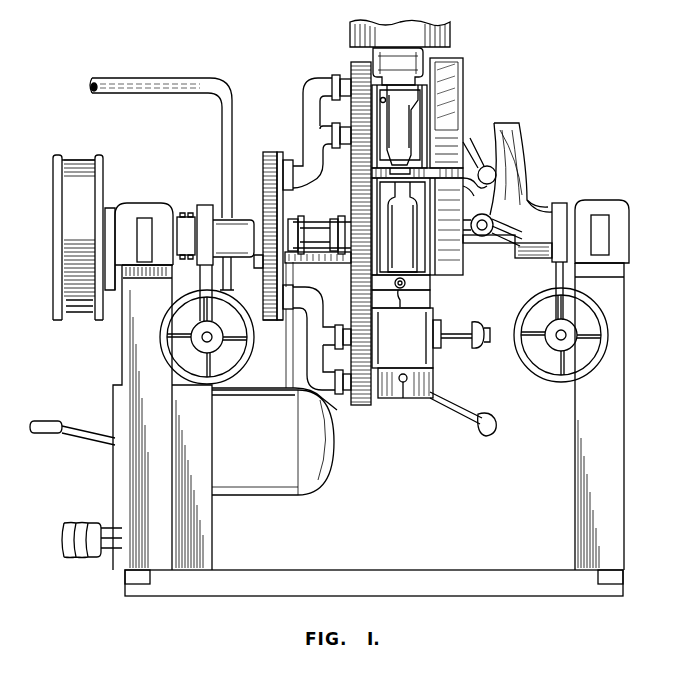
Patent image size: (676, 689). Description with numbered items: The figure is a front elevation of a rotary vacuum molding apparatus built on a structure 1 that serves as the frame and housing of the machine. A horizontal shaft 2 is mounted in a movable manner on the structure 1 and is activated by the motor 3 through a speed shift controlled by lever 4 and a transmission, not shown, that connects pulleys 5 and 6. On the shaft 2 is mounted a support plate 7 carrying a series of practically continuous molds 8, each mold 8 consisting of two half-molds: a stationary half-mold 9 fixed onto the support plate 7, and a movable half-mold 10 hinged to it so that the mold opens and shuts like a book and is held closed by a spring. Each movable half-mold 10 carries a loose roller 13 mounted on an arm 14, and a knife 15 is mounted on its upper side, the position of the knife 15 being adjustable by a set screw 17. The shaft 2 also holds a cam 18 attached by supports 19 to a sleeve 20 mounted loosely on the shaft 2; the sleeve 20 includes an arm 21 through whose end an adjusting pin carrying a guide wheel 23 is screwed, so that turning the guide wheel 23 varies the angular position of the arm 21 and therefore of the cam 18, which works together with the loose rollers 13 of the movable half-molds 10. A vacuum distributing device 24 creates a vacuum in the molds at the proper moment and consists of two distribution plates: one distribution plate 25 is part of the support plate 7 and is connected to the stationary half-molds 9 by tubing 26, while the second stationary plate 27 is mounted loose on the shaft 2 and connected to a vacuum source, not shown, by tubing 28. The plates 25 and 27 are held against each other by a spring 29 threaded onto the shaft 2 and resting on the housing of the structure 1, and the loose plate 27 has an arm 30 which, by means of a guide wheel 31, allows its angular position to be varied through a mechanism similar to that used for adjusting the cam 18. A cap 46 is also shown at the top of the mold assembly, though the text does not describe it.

The structure 1 is at (620, 480).
The horizontal shaft 2 is at (190, 250).
The motor 3 is at (325, 455).
The lever 4 is at (55, 420).
The pulley 5 is at (66, 522).
The pulley 6 is at (60, 235).
The support plate 7 is at (376, 405).
The mold 8 is at (434, 362).
The stationary half-mold 9 is at (418, 97).
The movable half-mold 10 is at (452, 108).
The loose roller 13 is at (505, 160).
The arm 14 is at (462, 145).
The knife 15 is at (480, 186).
The set screw 17 is at (480, 166).
The cam 18 is at (512, 242).
The supports 19 is at (527, 193).
The sleeve 20 is at (542, 260).
The arm 21 is at (556, 282).
The guide wheel 23 is at (548, 378).
The distributing device 24 is at (278, 321).
The distribution plate 25 is at (281, 152).
The tubing 26 is at (320, 85).
The stationary plate 27 is at (266, 152).
The tubing 28 is at (172, 80).
The spring 29 is at (190, 213).
The arm 30 is at (218, 285).
The guide wheel 31 is at (250, 347).
The cap 46 is at (452, 30).